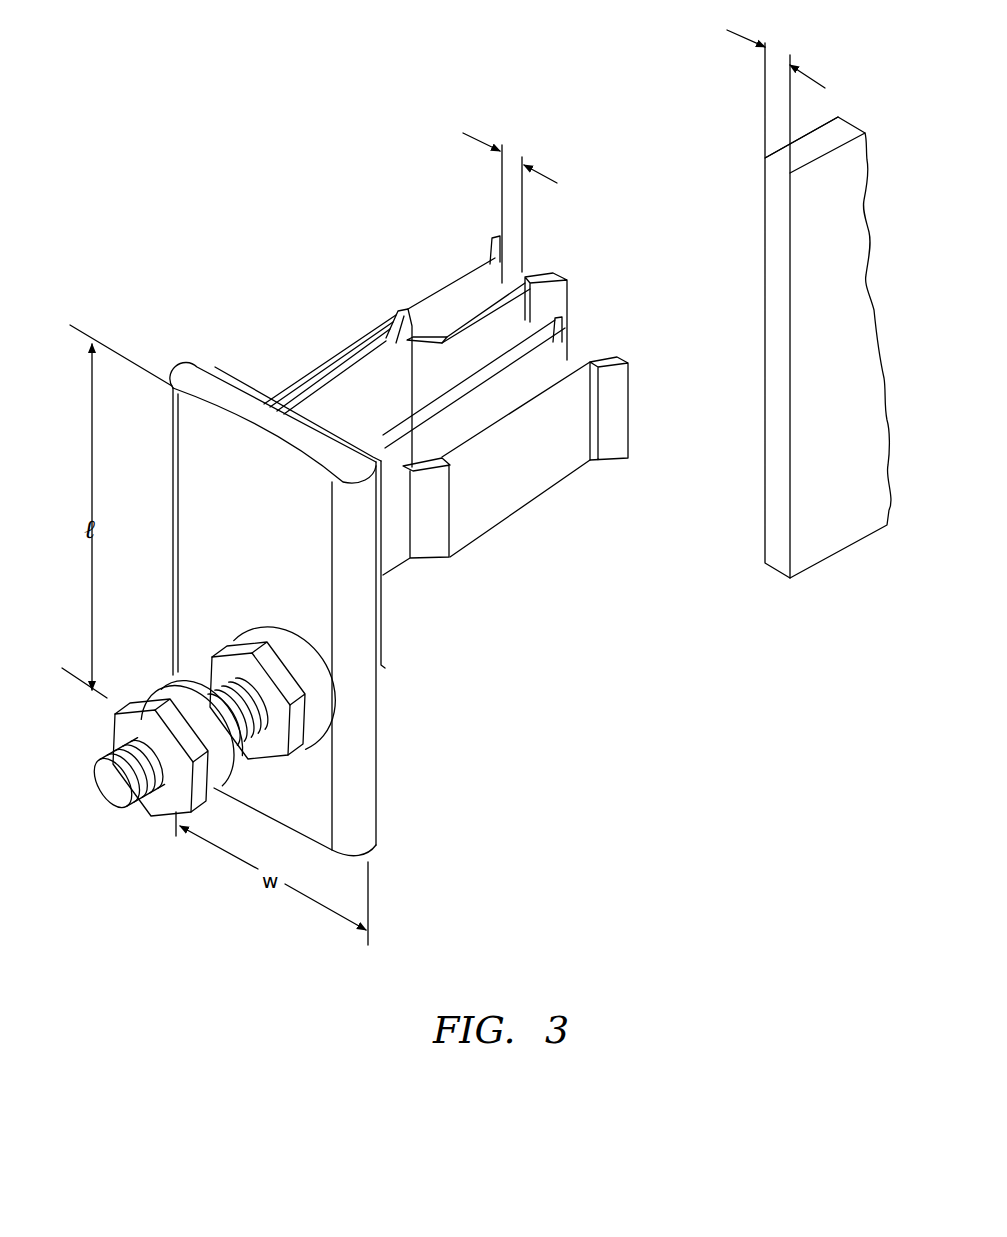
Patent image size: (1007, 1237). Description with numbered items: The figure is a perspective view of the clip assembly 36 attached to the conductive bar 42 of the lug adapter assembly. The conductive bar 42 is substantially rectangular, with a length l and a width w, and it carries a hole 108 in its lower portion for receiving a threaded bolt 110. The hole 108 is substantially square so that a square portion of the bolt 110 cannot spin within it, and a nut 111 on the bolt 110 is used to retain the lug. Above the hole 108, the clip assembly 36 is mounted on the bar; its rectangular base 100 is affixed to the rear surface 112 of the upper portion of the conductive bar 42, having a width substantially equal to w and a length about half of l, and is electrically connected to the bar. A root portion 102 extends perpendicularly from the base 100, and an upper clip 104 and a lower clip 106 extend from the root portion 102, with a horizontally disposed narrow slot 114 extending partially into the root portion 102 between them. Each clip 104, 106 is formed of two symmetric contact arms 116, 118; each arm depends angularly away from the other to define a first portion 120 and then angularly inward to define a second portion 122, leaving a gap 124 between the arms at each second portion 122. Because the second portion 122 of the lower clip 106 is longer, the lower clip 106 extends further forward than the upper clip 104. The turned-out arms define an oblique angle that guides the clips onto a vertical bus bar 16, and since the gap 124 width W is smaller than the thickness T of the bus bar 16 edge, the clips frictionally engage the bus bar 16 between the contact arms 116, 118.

The bus bar 16 is at (830, 336).
The clip assembly 36 is at (437, 494).
The conductive bar 42 is at (396, 790).
The rectangular base 100 is at (320, 583).
The root portion 102 is at (300, 382).
The upper clip 104 is at (485, 369).
The lower clip 106 is at (597, 476).
The hole 108 is at (258, 622).
The threaded bolt 110 is at (272, 755).
The nut 111 is at (112, 728).
The rear surface 112 is at (380, 693).
The slot 114 is at (383, 394).
The contact arm 116 is at (481, 231).
The contact arm 118 is at (570, 278).
The first portion 120 is at (390, 324).
The second portion 122 is at (467, 313).
The gap 124 is at (523, 267).